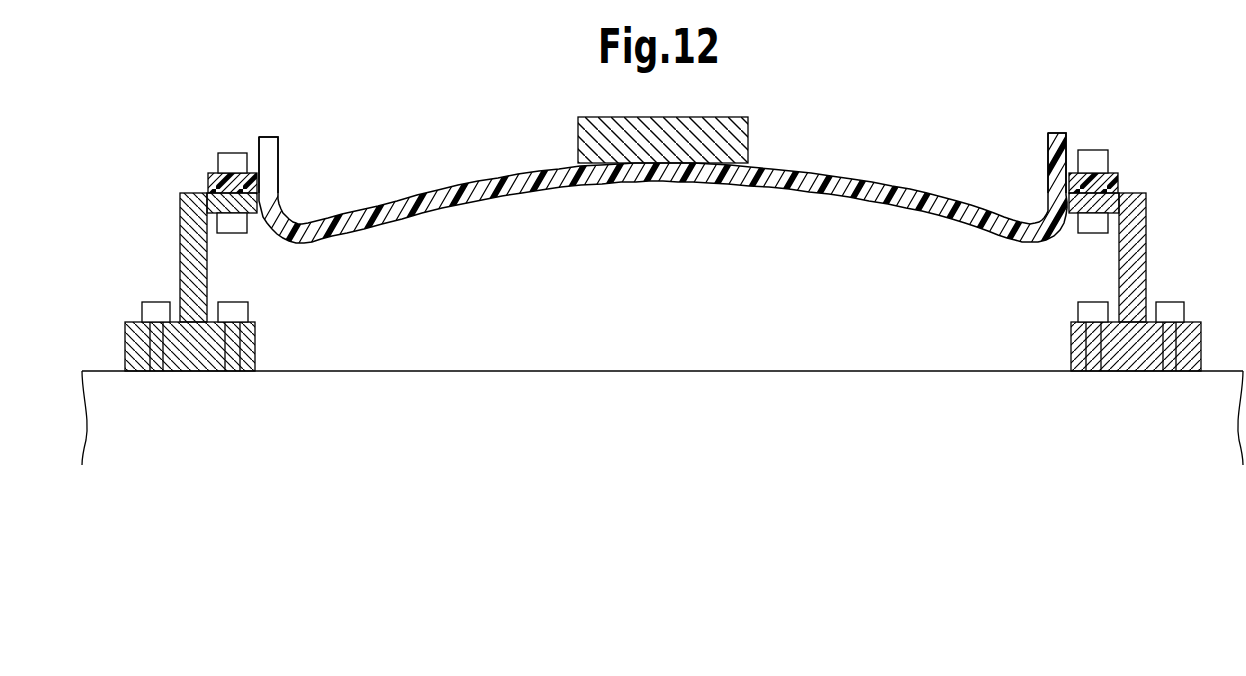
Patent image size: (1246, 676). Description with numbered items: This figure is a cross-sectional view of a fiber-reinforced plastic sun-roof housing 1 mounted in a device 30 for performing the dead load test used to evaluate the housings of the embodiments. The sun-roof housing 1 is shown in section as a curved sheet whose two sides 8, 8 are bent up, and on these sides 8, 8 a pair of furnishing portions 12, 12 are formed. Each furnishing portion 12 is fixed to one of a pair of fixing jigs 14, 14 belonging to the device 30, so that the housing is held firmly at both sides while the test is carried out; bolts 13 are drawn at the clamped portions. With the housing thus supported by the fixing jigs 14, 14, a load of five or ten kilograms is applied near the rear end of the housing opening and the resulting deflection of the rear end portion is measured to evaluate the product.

The sun-roof housing 1 is at (347, 213).
The sides of the sun-roof housing 8 is at (263, 137).
The furnishing portion 12 is at (215, 187).
The bolt 13 is at (1092, 150).
The fixing jig 14 is at (180, 240).
The device for performing the dead load test 30 is at (1158, 179).